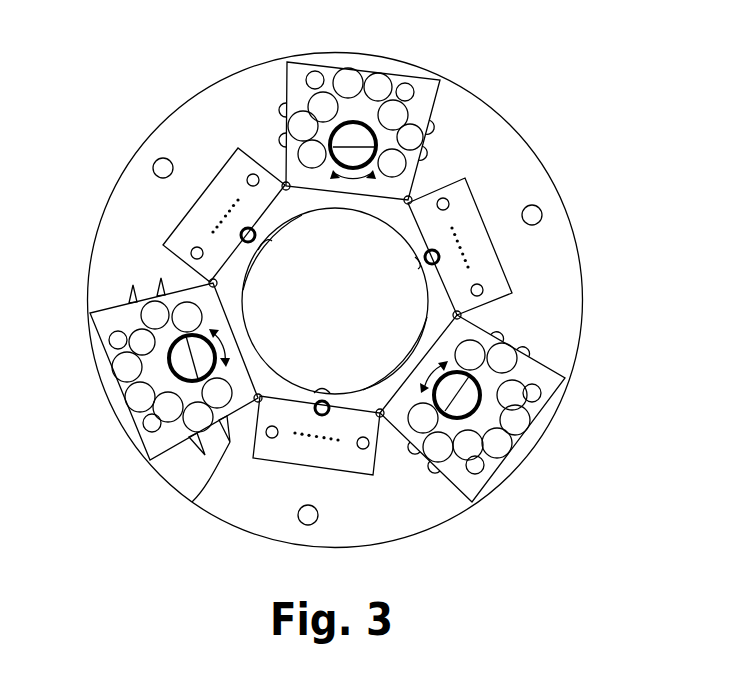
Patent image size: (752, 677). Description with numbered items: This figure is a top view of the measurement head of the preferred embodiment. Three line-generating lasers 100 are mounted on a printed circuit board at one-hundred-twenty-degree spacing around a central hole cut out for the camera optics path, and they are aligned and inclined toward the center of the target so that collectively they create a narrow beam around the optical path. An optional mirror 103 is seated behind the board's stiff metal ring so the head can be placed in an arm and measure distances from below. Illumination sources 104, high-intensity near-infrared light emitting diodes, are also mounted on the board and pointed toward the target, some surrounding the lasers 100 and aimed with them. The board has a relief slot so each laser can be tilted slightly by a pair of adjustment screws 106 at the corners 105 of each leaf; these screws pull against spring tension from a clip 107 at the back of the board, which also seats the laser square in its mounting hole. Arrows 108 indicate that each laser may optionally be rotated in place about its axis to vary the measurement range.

The laser 100 is at (353, 147).
The mirror 103 is at (284, 363).
The illumination source 104 is at (412, 137).
The corner 105 is at (285, 185).
The adjustment screw 106 is at (152, 425).
The clip 107 is at (205, 455).
The arrows 108 is at (435, 378).